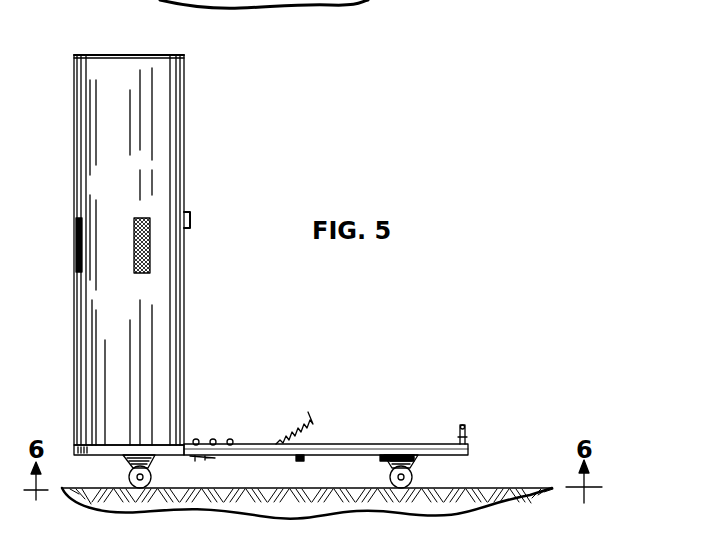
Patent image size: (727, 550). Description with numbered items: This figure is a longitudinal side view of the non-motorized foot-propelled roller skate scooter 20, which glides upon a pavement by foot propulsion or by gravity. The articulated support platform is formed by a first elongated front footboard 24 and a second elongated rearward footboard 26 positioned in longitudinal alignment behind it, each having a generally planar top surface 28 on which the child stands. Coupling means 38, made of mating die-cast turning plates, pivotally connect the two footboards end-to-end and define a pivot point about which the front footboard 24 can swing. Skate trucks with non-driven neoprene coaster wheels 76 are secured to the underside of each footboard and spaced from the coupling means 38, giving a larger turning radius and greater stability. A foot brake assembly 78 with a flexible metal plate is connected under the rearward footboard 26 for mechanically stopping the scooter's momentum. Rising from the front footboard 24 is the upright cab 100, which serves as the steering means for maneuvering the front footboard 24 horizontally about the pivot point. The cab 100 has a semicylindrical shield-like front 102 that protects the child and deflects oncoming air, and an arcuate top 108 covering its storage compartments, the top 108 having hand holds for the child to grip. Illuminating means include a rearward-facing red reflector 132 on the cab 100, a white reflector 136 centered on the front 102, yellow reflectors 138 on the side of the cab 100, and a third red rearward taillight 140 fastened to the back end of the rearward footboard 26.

The roller skate scooter 20 is at (73, 54).
The front footboard 24 is at (110, 456).
The rearward footboard 26 is at (458, 450).
The top surface 28 is at (345, 444).
The coupling means 38 is at (221, 440).
The coaster wheels 76 is at (152, 470).
The foot brake assembly 78 is at (305, 413).
The upright cab 100 is at (185, 347).
The shield-like front 102 is at (74, 172).
The top 108 is at (142, 55).
The first red reflector 132 is at (187, 218).
The white reflector 136 is at (76, 239).
The yellow reflectors 138 is at (160, 296).
The rearward taillight 140 is at (466, 437).